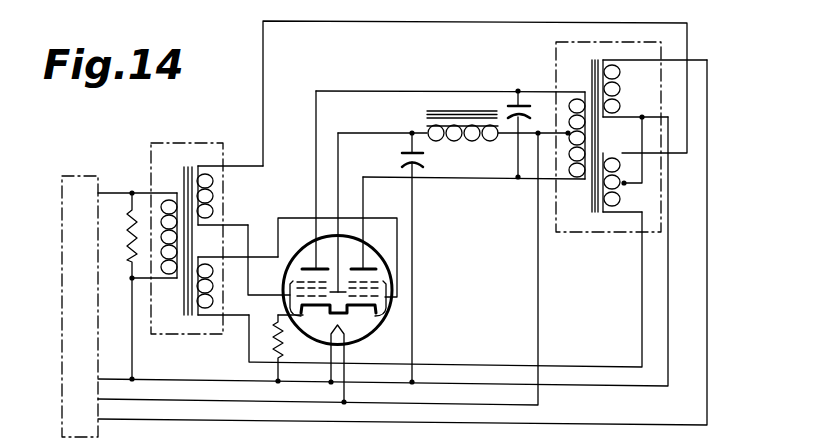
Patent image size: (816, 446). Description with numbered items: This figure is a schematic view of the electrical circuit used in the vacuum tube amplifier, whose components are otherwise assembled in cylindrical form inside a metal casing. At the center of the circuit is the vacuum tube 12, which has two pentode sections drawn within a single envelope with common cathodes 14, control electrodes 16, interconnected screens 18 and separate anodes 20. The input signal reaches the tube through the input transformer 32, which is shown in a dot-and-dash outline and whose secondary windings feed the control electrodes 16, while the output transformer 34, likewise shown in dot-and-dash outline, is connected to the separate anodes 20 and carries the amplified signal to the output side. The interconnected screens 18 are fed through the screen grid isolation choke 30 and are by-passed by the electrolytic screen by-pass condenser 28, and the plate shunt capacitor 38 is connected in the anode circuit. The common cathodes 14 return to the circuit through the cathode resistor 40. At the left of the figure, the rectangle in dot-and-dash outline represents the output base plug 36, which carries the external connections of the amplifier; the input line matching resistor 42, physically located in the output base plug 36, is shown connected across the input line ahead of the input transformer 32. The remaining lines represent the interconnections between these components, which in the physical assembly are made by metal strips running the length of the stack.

The vacuum tube 12 is at (388, 316).
The common cathodes 14 is at (321, 318).
The control electrodes 16 is at (289, 294).
The interconnected screens 18 is at (338, 206).
The separate anodes 20 is at (316, 231).
The electrolytic screen by-pass condenser 28 is at (400, 156).
The screen grid isolation choke 30 is at (428, 112).
The input transformer 32 is at (187, 225).
The output transformer 34 is at (608, 137).
The output base plug 36 is at (62, 358).
The plate shunt capacitor 38 is at (532, 100).
The cathode resistor 40 is at (263, 341).
The input line matching resistor 42 is at (126, 237).